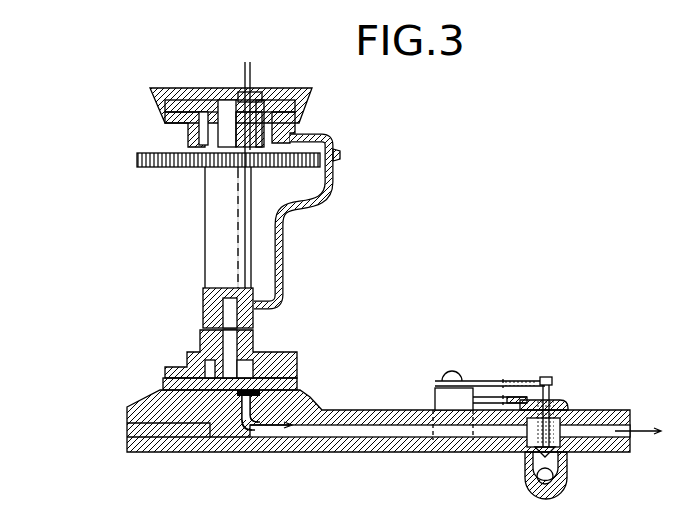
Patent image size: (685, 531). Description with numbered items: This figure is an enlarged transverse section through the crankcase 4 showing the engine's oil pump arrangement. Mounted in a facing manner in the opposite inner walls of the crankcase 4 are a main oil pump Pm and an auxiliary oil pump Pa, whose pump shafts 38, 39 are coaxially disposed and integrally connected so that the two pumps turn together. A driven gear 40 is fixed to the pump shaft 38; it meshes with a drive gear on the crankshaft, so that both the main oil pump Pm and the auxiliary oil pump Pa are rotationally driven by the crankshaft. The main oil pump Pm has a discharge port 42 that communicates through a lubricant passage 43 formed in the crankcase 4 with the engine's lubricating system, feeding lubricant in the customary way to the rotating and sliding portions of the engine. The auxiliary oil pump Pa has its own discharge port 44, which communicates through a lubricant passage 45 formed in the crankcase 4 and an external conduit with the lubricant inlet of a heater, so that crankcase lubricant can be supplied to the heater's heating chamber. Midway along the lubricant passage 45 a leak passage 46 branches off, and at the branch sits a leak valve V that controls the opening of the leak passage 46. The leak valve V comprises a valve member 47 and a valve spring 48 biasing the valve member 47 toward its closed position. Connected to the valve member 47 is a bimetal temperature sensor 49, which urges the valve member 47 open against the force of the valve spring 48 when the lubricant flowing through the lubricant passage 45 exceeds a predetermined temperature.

The crankcase 4 is at (348, 441).
The pump shaft 38 is at (247, 151).
The pump shaft 39 is at (219, 346).
The driven gear 40 is at (167, 168).
The discharge port 42 is at (248, 104).
The lubricant passage 43 is at (242, 86).
The discharge port 44 is at (252, 410).
The lubricant passage 45 is at (368, 428).
The leak passage 46 is at (536, 466).
The valve member 47 is at (566, 459).
The valve spring 48 is at (565, 415).
The temperature sensor 49 is at (487, 372).
The main oil pump Pm is at (298, 128).
The auxiliary oil pump Pa is at (292, 358).
The leak valve V is at (564, 391).